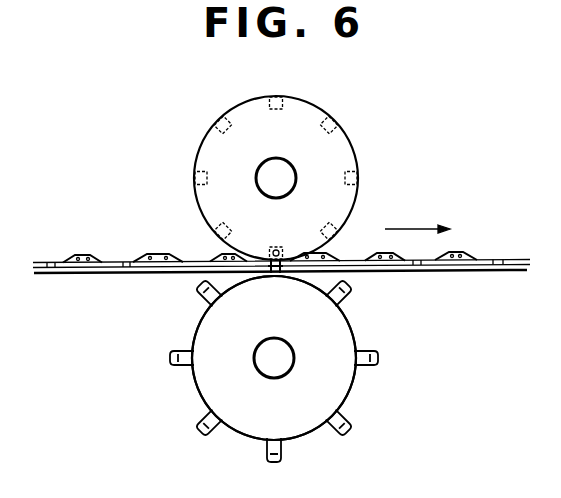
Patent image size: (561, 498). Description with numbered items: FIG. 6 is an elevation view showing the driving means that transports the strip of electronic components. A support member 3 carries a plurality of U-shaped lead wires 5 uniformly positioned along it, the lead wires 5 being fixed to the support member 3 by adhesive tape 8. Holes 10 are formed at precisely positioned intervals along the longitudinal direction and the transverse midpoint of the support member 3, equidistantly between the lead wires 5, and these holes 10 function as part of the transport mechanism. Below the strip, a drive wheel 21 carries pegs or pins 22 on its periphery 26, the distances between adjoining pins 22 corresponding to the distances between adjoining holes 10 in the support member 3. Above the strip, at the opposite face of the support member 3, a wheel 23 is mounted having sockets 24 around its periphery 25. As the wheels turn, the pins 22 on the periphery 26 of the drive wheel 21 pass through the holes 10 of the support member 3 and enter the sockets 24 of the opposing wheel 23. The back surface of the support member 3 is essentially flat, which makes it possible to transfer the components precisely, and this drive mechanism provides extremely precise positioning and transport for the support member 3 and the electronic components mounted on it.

The support member 3 is at (72, 275).
The U-shaped lead wires 5 is at (76, 258).
The adhesive tape 8 is at (112, 260).
The holes 10 is at (125, 278).
The drive wheel 21 is at (200, 383).
The pins 22 is at (200, 427).
The wheel 23 is at (207, 150).
The sockets 24 is at (214, 237).
The periphery 25 is at (356, 152).
The periphery 26 is at (356, 338).